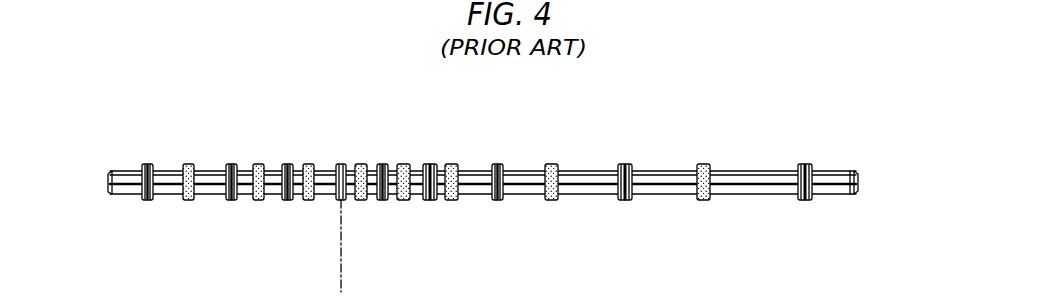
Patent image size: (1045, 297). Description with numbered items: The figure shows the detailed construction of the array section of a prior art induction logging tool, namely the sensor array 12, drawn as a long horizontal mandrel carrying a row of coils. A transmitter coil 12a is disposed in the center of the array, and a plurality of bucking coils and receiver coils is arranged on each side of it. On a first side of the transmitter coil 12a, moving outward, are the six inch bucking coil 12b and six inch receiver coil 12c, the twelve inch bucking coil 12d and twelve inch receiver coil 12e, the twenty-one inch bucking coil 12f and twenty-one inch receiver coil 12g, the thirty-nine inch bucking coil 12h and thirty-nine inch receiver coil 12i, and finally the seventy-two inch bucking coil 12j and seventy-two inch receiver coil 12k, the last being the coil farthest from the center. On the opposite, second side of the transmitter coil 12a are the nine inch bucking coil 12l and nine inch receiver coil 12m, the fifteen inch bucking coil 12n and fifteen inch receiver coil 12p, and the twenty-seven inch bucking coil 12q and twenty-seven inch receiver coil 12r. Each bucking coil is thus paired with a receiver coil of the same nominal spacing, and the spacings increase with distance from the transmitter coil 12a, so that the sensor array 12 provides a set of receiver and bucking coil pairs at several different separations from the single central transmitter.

The sensor array 12 is at (518, 127).
The transmitter coil 12a is at (343, 200).
The 6 inch bucking coil 12b is at (361, 163).
The 6 inch receiver coil 12c is at (384, 200).
The 12 inch bucking coil 12d is at (404, 163).
The 12 inch receiver coil 12e is at (430, 200).
The 21 inch bucking coil 12f is at (452, 163).
The 21 inch receiver coil 12g is at (498, 200).
The 39 inch bucking coil 12h is at (552, 163).
The 39 inch receiver coil 12i is at (625, 200).
The 72 inch bucking coil 12j is at (703, 163).
The 72 inch receiver coil 12k is at (805, 200).
The 9 inch bucking coil 12l is at (308, 163).
The 9 inch receiver coil 12m is at (288, 200).
The 15 inch bucking coil 12n is at (258, 163).
The 15 inch receiver coil 12p is at (232, 200).
The 27 inch bucking coil 12q is at (186, 163).
The 27 inch receiver coil 12r is at (146, 200).